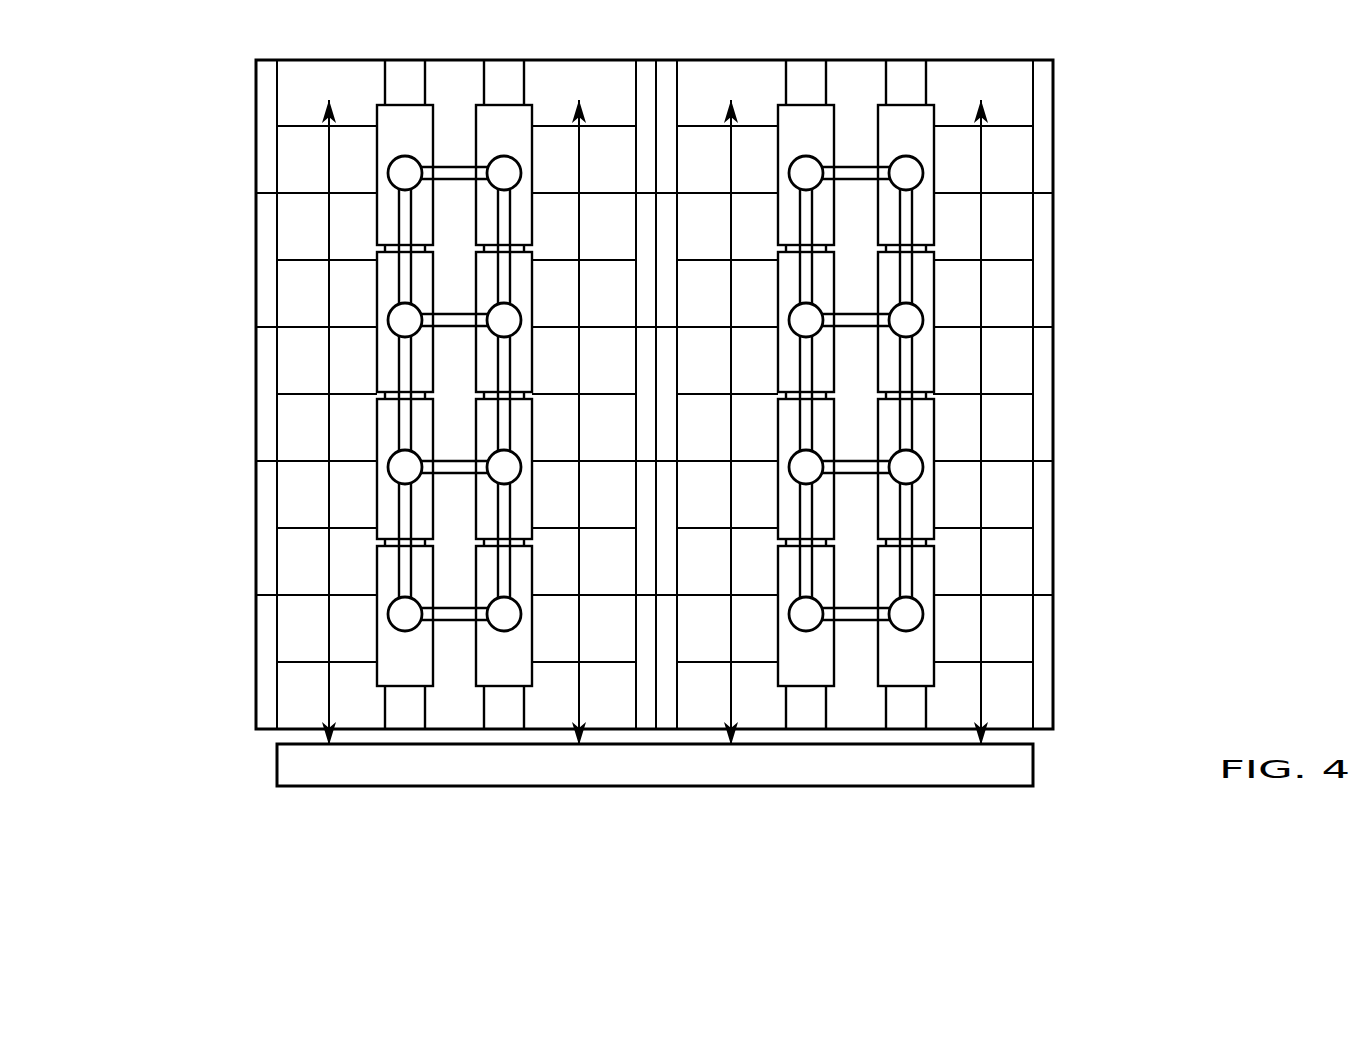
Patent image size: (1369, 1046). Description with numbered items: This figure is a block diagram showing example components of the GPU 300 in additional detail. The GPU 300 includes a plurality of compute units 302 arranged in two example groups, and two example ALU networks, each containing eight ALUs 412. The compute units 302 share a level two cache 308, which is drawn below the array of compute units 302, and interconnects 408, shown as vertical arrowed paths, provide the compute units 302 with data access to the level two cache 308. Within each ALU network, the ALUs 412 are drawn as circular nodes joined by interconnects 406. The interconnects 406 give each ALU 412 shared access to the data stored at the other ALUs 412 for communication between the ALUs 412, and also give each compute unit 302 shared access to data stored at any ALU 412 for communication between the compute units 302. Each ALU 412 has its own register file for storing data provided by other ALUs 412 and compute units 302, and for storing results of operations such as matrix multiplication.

The GPU 300 is at (53, 64).
The compute unit 302 is at (323, 80).
The level 2 cache 308 is at (655, 765).
The interconnect 406 is at (403, 281).
The interconnect 408 is at (333, 147).
The ALU 412 is at (503, 118).